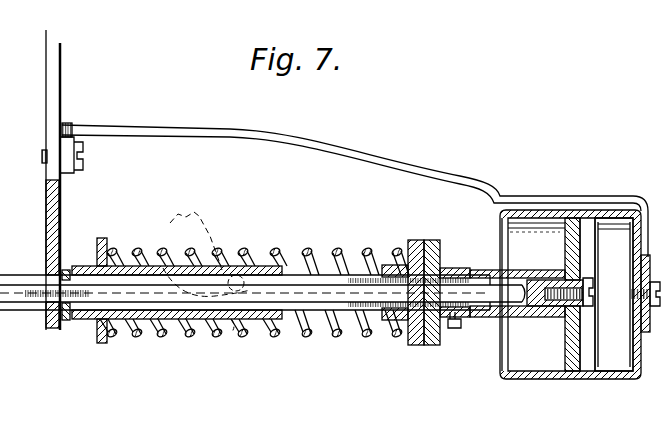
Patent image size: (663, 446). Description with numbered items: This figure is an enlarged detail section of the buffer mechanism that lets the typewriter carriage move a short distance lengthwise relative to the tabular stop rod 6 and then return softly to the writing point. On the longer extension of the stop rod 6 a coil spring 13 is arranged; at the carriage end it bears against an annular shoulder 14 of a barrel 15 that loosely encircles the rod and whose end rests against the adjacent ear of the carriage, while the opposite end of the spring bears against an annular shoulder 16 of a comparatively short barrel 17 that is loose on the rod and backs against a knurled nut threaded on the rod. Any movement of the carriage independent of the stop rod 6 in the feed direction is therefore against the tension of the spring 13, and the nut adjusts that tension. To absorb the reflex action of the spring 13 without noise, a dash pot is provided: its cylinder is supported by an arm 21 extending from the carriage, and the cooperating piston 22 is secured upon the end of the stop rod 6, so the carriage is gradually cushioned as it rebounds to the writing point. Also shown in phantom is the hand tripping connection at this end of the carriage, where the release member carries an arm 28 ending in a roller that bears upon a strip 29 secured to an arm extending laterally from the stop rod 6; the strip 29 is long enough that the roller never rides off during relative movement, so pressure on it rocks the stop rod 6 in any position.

The stop rod 6 is at (288, 284).
The coil spring 13 is at (335, 253).
The annular shoulder 14 is at (108, 240).
The barrel 15 is at (133, 262).
The annular shoulder 16 is at (404, 241).
The short barrel 17 is at (388, 266).
The arm 21 is at (561, 196).
The piston 22 is at (605, 212).
The arm 28 is at (203, 216).
The strip 29 is at (236, 322).